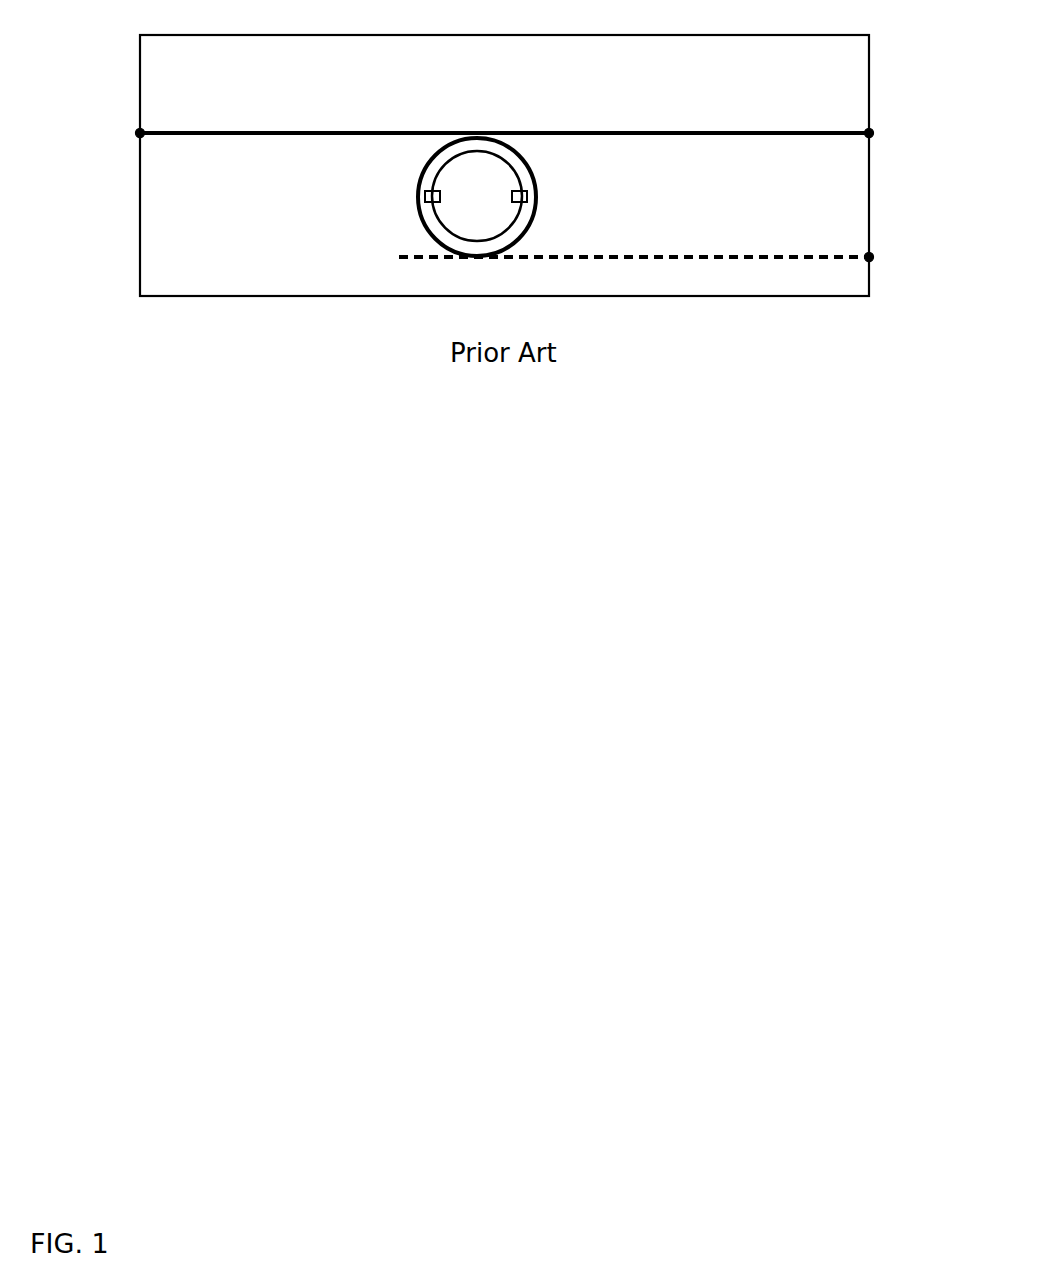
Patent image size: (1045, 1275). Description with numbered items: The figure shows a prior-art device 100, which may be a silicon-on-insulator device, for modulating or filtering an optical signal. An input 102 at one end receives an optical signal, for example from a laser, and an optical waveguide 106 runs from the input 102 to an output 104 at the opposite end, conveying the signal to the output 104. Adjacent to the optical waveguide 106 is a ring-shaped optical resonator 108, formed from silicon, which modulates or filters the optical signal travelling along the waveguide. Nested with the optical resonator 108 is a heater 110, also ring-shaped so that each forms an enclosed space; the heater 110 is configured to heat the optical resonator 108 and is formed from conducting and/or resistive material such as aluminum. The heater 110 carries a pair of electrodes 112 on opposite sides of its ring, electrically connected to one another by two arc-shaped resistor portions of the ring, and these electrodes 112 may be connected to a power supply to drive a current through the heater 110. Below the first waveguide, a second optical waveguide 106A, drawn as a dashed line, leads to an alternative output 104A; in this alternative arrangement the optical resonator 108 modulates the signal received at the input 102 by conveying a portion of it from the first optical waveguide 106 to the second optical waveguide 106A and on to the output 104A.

The device 100 is at (430, 35).
The input 102 is at (869, 133).
The output 104 is at (140, 133).
The output 104A is at (870, 256).
The optical waveguide 106 is at (598, 133).
The optical waveguide 106A is at (637, 256).
The optical resonator 108 is at (528, 165).
The heater 110 is at (445, 163).
The electrodes 112 is at (515, 203).